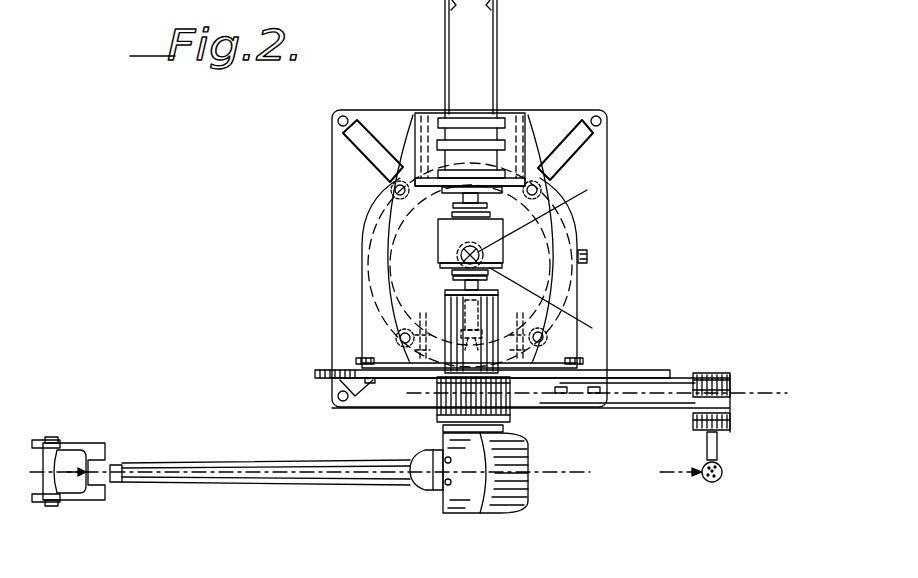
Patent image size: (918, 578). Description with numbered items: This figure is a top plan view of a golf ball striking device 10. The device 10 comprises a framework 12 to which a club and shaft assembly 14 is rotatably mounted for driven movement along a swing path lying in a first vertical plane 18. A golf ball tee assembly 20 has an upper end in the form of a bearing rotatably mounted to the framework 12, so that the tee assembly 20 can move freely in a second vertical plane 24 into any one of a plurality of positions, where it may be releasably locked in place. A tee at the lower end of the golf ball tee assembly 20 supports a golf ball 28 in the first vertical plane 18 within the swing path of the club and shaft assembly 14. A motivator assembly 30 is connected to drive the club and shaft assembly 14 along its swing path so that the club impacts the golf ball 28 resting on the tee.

The golf ball striking device 10 is at (680, 282).
The framework 12 is at (612, 155).
The club and shaft assembly 14 is at (305, 487).
The first vertical plane 18 is at (540, 482).
The golf ball tee assembly 20 is at (579, 412).
The second vertical plane 24 is at (758, 392).
The golf ball 28 is at (708, 483).
The motivator assembly 30 is at (503, 66).